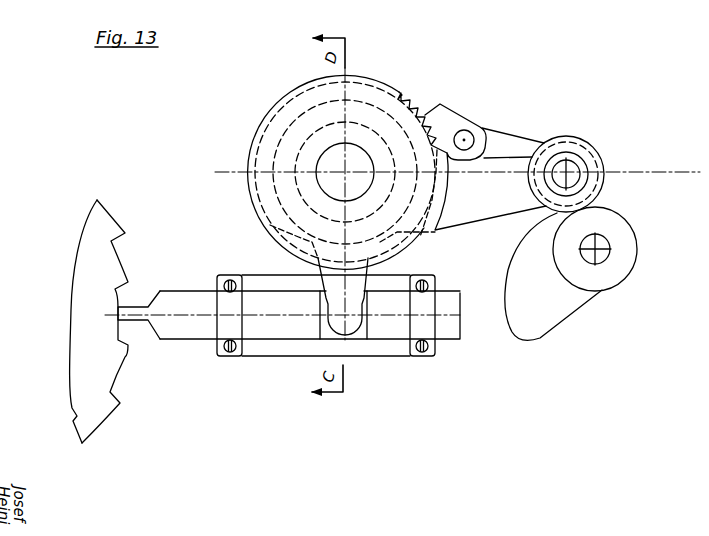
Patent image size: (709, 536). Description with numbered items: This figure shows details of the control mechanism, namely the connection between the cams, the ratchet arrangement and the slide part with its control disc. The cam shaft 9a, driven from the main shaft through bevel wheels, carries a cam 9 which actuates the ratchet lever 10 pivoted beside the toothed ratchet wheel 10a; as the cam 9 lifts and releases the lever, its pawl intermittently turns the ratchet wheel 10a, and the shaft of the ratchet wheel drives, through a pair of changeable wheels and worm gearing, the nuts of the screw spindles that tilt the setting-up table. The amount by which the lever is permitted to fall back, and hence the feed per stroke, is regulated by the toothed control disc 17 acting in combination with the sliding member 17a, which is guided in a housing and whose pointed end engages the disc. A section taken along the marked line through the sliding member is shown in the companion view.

The cam 9 is at (562, 305).
The cam shaft 9a is at (605, 256).
The ratchet lever 10 is at (508, 148).
The ratchet wheel 10a is at (383, 97).
The control disc 17 is at (113, 363).
The sliding member 17a is at (383, 328).